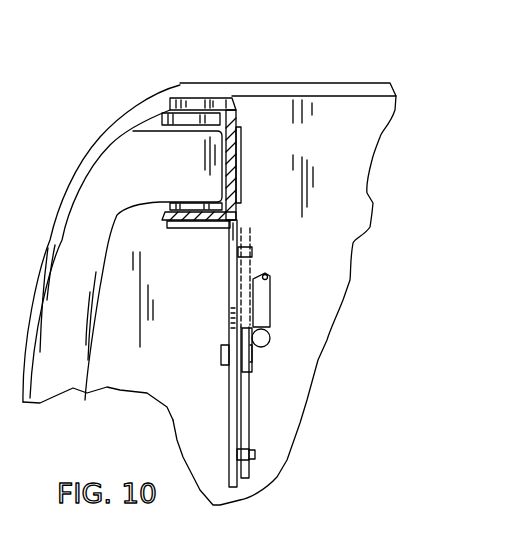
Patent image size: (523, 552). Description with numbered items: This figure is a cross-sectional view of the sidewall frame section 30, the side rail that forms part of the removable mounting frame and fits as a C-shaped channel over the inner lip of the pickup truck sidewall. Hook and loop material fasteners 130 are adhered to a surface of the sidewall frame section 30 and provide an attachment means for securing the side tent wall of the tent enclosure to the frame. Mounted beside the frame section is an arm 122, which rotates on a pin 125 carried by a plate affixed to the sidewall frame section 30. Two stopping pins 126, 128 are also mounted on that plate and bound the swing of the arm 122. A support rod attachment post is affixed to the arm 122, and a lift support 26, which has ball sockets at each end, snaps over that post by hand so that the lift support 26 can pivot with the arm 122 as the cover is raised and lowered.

The sidewall frame section 30 is at (197, 112).
The hook and loop material fasteners 130 is at (238, 157).
The stopping pin 126 is at (238, 252).
The lift support 26 is at (262, 303).
The pin 125 is at (222, 352).
The arm 122 is at (248, 393).
The stopping pin 128 is at (237, 452).